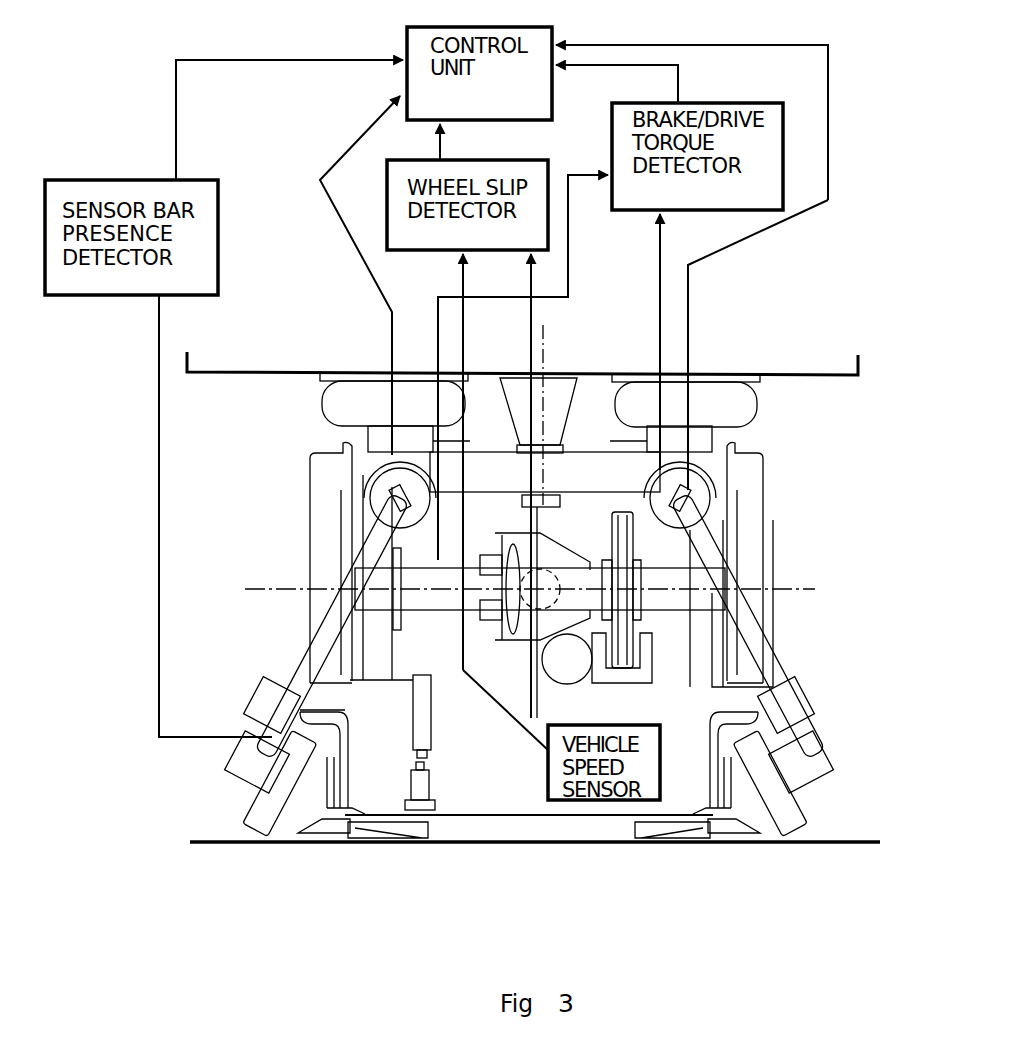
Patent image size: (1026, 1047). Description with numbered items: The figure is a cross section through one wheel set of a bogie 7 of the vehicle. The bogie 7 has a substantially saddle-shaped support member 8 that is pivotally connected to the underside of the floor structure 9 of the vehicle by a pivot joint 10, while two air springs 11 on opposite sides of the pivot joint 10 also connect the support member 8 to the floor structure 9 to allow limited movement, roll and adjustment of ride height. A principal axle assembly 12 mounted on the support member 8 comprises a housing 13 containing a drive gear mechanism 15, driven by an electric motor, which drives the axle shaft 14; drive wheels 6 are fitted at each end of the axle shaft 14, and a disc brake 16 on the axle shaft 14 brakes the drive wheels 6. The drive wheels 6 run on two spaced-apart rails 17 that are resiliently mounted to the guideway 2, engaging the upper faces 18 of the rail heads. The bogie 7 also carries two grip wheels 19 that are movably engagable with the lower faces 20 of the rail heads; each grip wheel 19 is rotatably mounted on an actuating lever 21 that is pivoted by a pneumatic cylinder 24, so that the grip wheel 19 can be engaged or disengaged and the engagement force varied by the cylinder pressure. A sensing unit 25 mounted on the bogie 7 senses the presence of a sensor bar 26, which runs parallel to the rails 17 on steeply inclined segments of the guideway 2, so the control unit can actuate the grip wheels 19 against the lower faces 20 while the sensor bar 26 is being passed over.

The guideway 2 is at (812, 848).
The drive wheels 6 is at (320, 477).
The bogie 7 is at (800, 438).
The support member 8 is at (430, 470).
The floor structure 9 is at (770, 340).
The pivot joint 10 is at (562, 445).
The air springs 11 is at (378, 400).
The principal axle assembly 12 is at (470, 612).
The housing 13 is at (500, 533).
The axle shaft 14 is at (430, 597).
The drive gear mechanism 15 is at (527, 635).
The disc brake 16 is at (628, 683).
The rails 17 is at (330, 740).
The upper faces 18 is at (300, 710).
The grip wheels 19 is at (270, 815).
The lower faces 20 is at (283, 747).
The actuating lever 21 is at (300, 663).
The pneumatic cylinder 24 is at (376, 498).
The sensing unit 25 is at (427, 724).
The sensor bar 26 is at (430, 785).